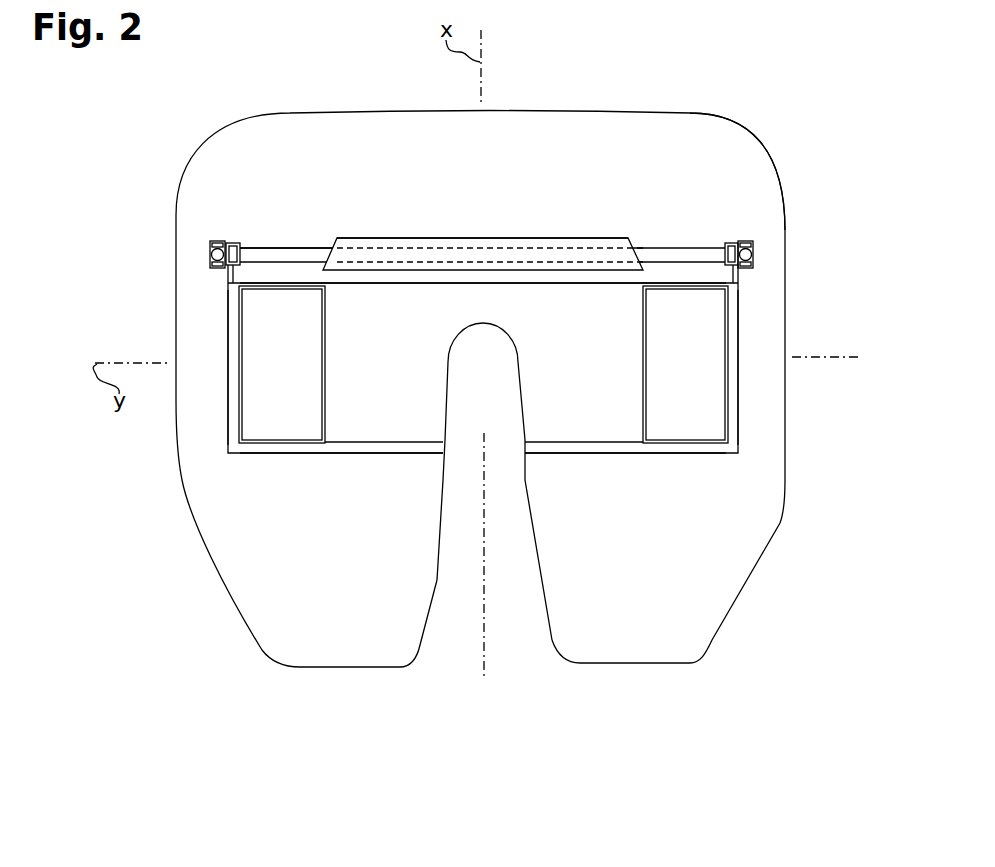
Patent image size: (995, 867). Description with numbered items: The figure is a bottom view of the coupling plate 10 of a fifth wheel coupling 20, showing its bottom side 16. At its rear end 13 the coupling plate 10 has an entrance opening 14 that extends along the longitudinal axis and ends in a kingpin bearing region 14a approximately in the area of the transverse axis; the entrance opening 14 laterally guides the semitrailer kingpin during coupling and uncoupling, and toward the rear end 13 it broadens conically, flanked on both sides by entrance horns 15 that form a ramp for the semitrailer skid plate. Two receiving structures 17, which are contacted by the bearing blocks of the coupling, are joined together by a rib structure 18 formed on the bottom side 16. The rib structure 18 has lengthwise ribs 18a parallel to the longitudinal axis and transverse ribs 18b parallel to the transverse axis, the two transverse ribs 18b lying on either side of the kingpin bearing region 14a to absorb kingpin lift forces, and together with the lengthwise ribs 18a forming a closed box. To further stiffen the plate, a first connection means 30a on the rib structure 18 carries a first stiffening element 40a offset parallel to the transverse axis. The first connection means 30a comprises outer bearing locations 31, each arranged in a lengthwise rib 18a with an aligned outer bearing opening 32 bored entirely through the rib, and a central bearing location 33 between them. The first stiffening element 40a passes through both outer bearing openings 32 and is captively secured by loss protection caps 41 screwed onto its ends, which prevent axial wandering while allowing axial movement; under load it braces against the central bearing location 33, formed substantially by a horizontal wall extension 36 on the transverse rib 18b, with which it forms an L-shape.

The coupling plate 10 is at (348, 111).
The rear end 13 is at (303, 667).
The entrance opening 14 is at (530, 594).
The kingpin bearing region 14a is at (478, 323).
The entrance horns 15 is at (389, 645).
The bottom side 16 is at (212, 155).
The receiving structures 17 is at (298, 382).
The rib structure 18 is at (757, 282).
The lengthwise ribs 18a is at (232, 345).
The transverse ribs 18b is at (383, 283).
The fifth wheel coupling 20 is at (766, 129).
The first connection means 30a is at (642, 224).
The outer bearing locations 31 is at (233, 243).
The outer bearing openings 32 is at (730, 240).
The central bearing location 33 is at (540, 242).
The horizontal wall extension 36 is at (420, 240).
The first stiffening element 40a is at (288, 253).
The loss protection caps 41 is at (218, 271).